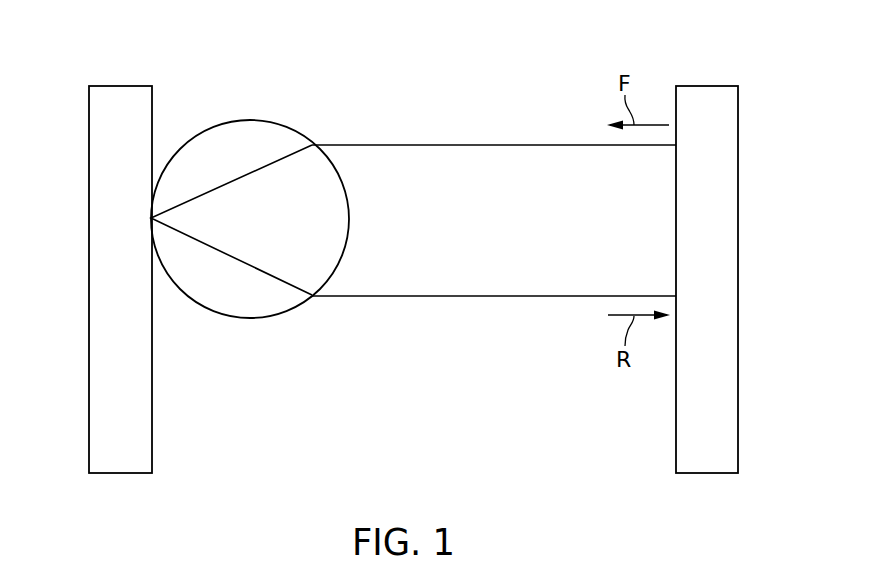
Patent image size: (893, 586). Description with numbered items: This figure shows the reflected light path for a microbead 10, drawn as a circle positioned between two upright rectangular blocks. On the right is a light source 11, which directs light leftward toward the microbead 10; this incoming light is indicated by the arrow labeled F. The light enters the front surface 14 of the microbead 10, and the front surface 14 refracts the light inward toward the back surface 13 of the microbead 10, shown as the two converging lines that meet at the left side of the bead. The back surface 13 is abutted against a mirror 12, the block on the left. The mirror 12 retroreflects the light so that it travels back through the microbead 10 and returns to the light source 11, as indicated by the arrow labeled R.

The microbead 10 is at (298, 100).
The light source 11 is at (738, 130).
The mirror 12 is at (90, 150).
The back surface 13 is at (160, 262).
The front surface 14 is at (348, 218).